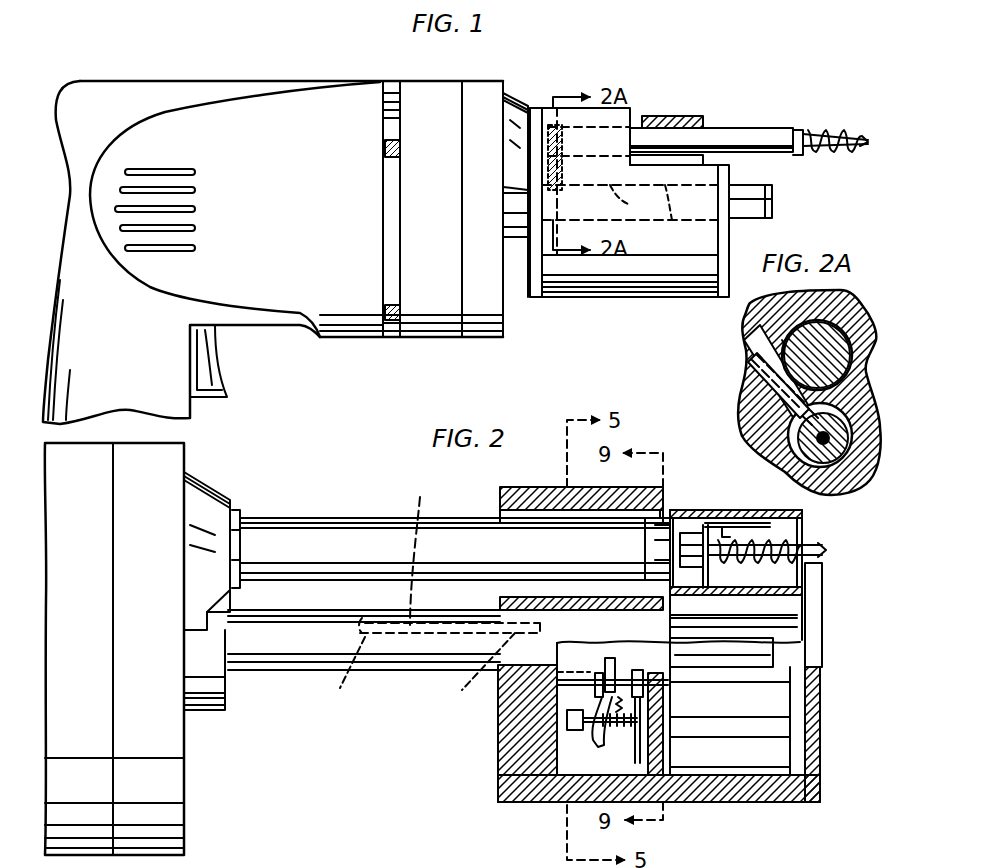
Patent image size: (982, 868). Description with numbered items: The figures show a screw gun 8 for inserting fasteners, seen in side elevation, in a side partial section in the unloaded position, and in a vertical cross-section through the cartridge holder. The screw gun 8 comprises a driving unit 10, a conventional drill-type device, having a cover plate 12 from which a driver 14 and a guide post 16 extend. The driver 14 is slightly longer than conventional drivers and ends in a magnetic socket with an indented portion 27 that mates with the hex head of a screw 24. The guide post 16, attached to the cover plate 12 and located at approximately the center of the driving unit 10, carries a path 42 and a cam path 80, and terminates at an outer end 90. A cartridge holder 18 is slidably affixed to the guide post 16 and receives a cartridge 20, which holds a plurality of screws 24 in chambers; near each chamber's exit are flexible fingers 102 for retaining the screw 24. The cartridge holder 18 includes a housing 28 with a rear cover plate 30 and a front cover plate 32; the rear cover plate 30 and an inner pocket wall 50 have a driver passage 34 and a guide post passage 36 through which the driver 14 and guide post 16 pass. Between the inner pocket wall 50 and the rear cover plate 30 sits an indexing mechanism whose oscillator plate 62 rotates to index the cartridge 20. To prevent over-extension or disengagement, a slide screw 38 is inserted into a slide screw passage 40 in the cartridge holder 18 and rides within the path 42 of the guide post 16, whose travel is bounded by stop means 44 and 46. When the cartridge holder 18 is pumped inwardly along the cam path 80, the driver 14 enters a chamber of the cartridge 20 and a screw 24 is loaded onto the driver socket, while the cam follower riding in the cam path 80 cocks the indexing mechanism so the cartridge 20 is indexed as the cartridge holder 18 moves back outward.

In FIG. 1, the screw gun 8 is at (232, 66).
In FIG. 1, the driving unit 10 is at (145, 81).
In FIG. 2, the driving unit 10 is at (84, 632).
In FIG. 1, the cover plate 12 is at (470, 340).
In FIG. 2, the cover plate 12 is at (160, 465).
In FIG. 1, the driver 14 is at (730, 128).
In FIG. 2A, the driver 14 is at (842, 330).
In FIG. 2, the driver 14 is at (286, 519).
In FIG. 2A, the guide post 16 is at (840, 403).
In FIG. 2, the guide post 16 is at (240, 672).
In FIG. 1, the cartridge holder 18 is at (672, 306).
In FIG. 1, the cartridge 20 is at (695, 115).
In FIG. 2, the cartridge 20 is at (790, 510).
In FIG. 1, the screw 24 is at (838, 138).
In FIG. 2, the screw 24 is at (826, 550).
In FIG. 2, the indented portion 27 is at (703, 525).
In FIG. 1, the housing 28 is at (718, 240).
In FIG. 2, the housing 28 is at (768, 802).
In FIG. 2, the rear cover plate 30 is at (500, 770).
In FIG. 1, the front cover plate 32 is at (735, 175).
In FIG. 2, the front cover plate 32 is at (820, 770).
In FIG. 2A, the driver passage 34 is at (786, 337).
In FIG. 2, the driver passage 34 is at (510, 525).
In FIG. 2A, the guide post passage 36 is at (787, 462).
In FIG. 2, the guide post passage 36 is at (500, 718).
In FIG. 1, the slide screw 38 is at (565, 168).
In FIG. 2A, the slide screw 38 is at (770, 392).
In FIG. 1, the slide screw passage 40 is at (570, 105).
In FIG. 2A, the slide screw passage 40 is at (746, 367).
In FIG. 1, the path 42 is at (630, 203).
In FIG. 2A, the path 42 is at (787, 432).
In FIG. 2, the path 42 is at (403, 554).
In FIG. 2, the stop means 44 is at (343, 680).
In FIG. 1, the stop means 46 is at (671, 245).
In FIG. 2, the stop means 46 is at (476, 667).
In FIG. 2, the inner pocket wall 50 is at (660, 489).
In FIG. 2, the oscillator plate 62 is at (640, 763).
In FIG. 1, the cam path 80 is at (560, 192).
In FIG. 2A, the cam path 80 is at (845, 432).
In FIG. 2, the cam path 80 is at (414, 670).
In FIG. 1, the outer end 90 is at (772, 202).
In FIG. 2, the finger 102 is at (752, 523).